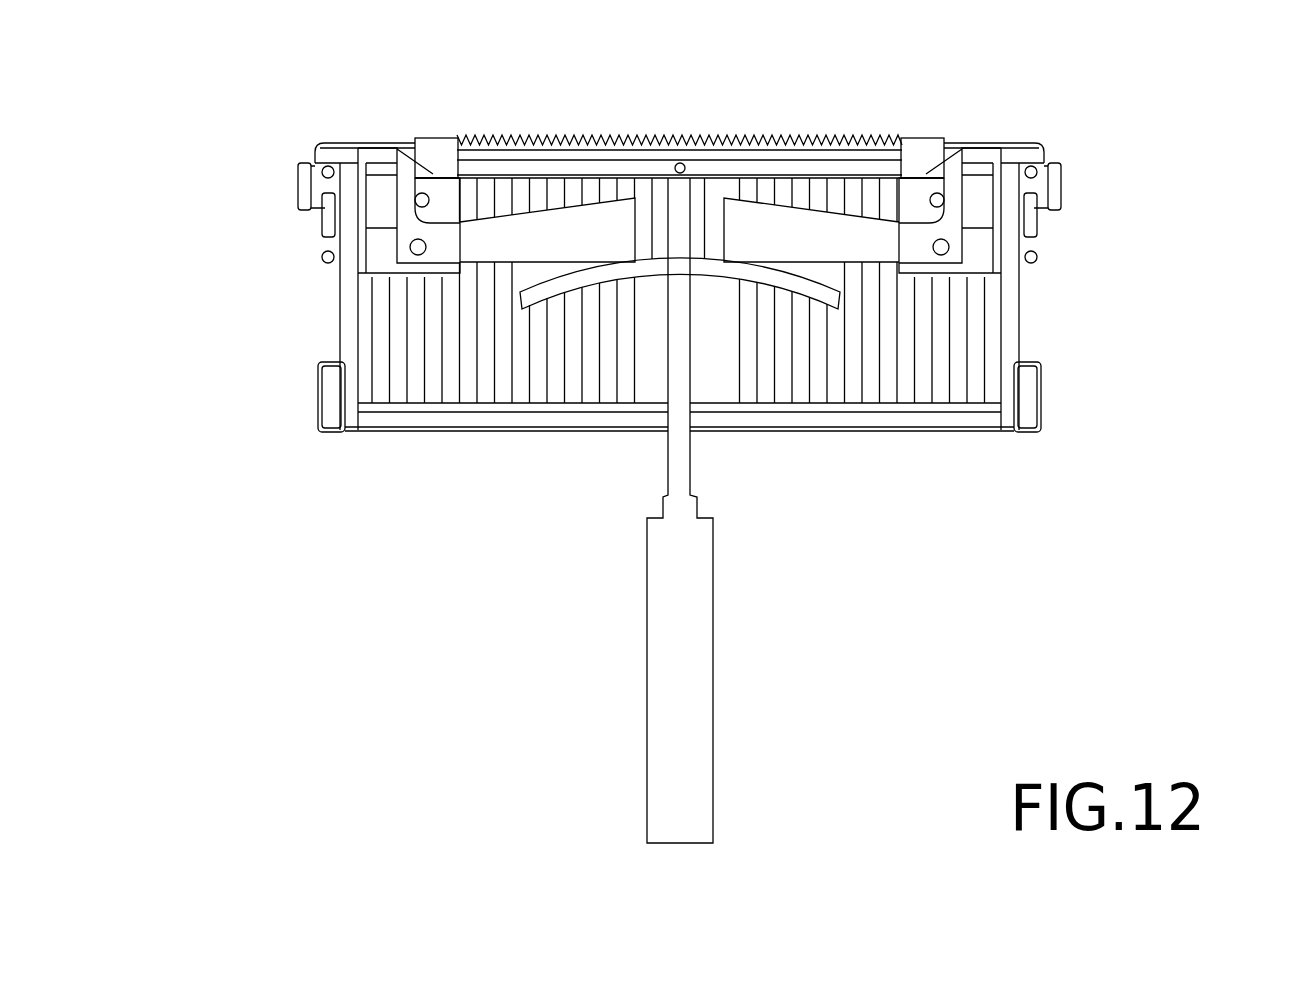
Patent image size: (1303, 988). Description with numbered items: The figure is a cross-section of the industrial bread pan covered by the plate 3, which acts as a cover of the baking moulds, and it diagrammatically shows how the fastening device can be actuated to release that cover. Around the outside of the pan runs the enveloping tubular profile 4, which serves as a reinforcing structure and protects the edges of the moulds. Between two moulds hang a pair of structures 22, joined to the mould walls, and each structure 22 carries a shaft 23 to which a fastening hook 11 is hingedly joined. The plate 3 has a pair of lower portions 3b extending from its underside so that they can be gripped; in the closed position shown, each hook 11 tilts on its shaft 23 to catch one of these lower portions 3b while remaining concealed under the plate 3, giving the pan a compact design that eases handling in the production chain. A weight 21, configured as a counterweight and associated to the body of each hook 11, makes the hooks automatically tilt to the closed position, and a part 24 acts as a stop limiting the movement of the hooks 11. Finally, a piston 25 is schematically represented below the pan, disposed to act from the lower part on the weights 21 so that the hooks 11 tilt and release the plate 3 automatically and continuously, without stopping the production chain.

The plate 3 is at (515, 138).
The lower portion 3b is at (433, 138).
The enveloping tubular profile 4 is at (320, 403).
The fastening hook 11 is at (373, 143).
The weight 21 is at (597, 230).
The structure 22 is at (322, 258).
The shaft 23 is at (387, 247).
The stop part 24 is at (414, 201).
The piston 25 is at (755, 275).